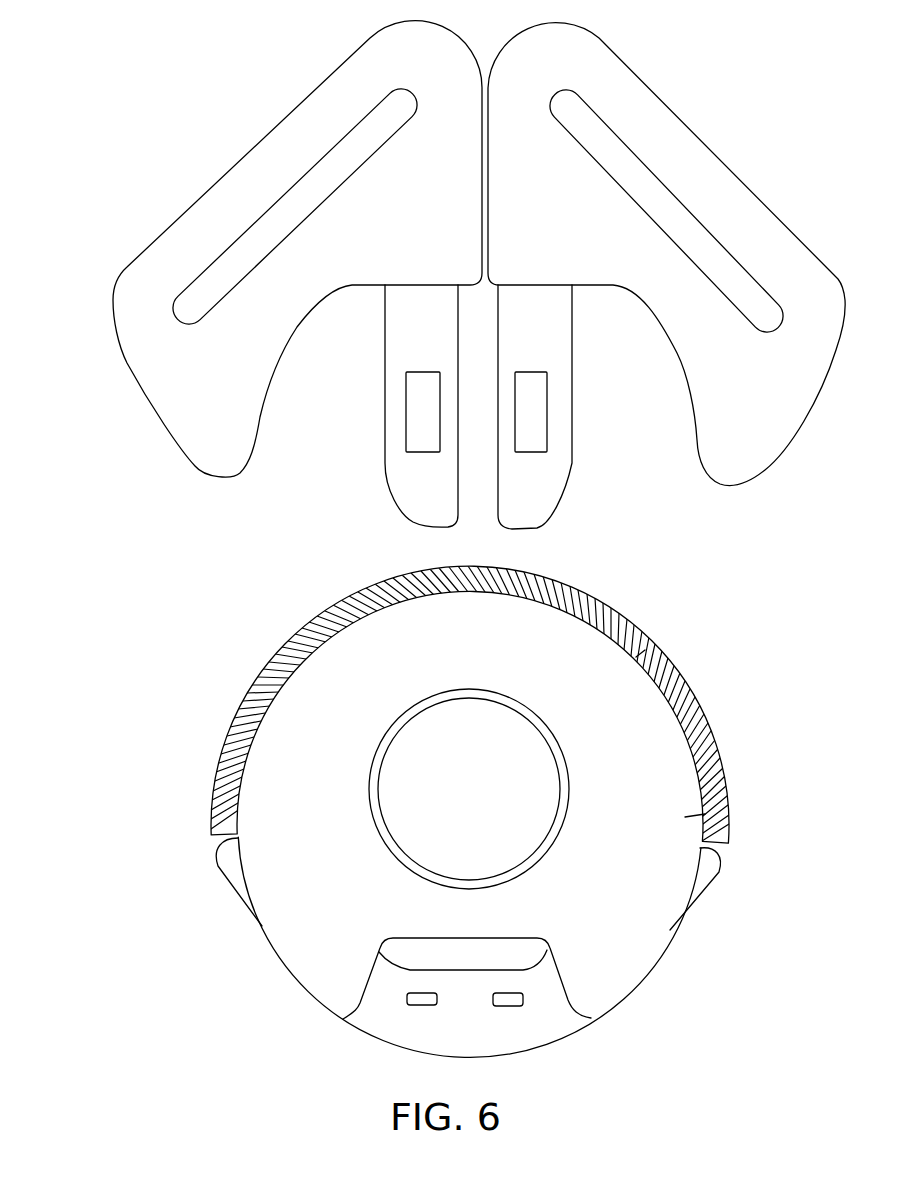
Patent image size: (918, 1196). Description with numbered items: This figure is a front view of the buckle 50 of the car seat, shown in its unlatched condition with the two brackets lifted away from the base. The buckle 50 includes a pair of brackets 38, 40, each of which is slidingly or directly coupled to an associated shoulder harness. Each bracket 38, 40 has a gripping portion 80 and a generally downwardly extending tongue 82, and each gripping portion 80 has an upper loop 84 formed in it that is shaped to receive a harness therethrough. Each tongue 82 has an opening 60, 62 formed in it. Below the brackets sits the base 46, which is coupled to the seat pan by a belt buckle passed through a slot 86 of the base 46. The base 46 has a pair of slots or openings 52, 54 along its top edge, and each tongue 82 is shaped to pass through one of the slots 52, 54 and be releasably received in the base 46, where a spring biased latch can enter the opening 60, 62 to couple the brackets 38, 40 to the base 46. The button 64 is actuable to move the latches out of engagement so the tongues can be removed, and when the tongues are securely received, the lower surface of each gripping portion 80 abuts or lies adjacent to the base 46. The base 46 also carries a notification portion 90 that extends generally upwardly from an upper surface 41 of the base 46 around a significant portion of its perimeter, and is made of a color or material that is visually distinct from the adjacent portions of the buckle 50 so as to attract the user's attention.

The bracket 38 is at (815, 372).
The bracket 40 is at (138, 358).
The upper surface 41 is at (633, 658).
The base 46 is at (705, 803).
The buckle 50 is at (403, 763).
The slot 52 is at (570, 562).
The slot 54 is at (382, 560).
The opening 60 is at (410, 393).
The opening 62 is at (545, 392).
The button 64 is at (515, 735).
The gripping portion 80 is at (469, 253).
The tongue 82 is at (393, 326).
The upper loop 84 is at (342, 152).
The slot 86 is at (463, 960).
The notification portion 90 is at (228, 724).